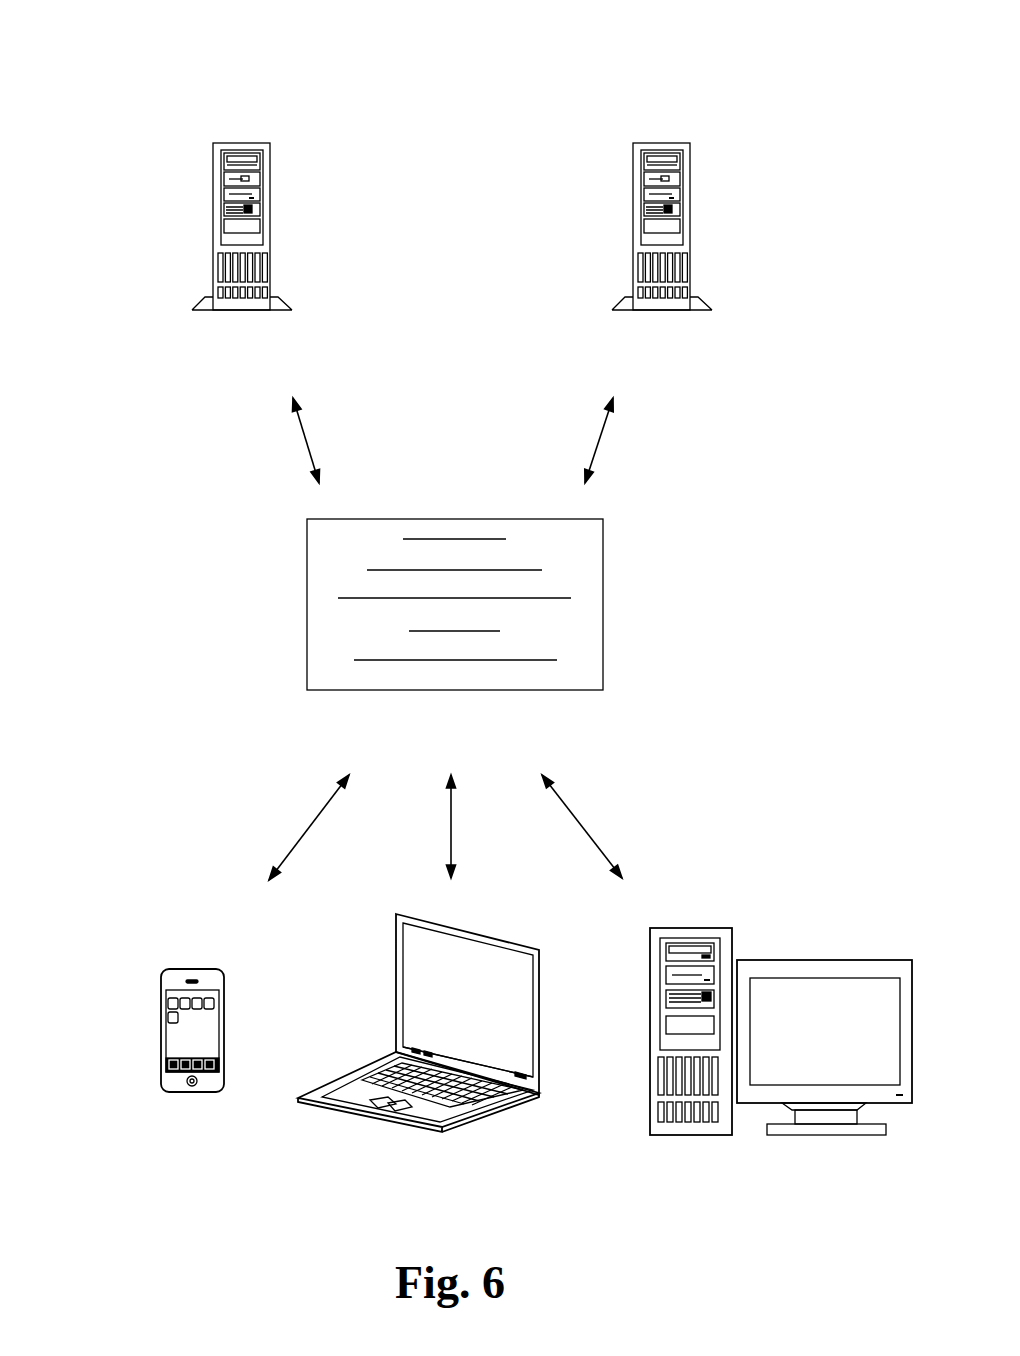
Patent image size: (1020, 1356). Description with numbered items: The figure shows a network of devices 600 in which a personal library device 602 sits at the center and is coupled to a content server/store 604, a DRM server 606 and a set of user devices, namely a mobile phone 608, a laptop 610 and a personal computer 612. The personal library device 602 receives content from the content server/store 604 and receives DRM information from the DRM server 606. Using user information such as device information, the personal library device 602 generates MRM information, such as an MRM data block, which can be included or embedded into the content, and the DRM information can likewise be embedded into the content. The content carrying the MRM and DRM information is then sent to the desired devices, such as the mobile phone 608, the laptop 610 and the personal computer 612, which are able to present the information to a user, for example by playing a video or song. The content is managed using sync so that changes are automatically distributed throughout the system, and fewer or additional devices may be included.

The network of devices 600 is at (110, 47).
The personal library device 602 is at (443, 519).
The content server/store 604 is at (234, 143).
The DRM server 606 is at (654, 143).
The mobile phone 608 is at (187, 969).
The laptop 610 is at (500, 1115).
The personal computer 612 is at (803, 907).